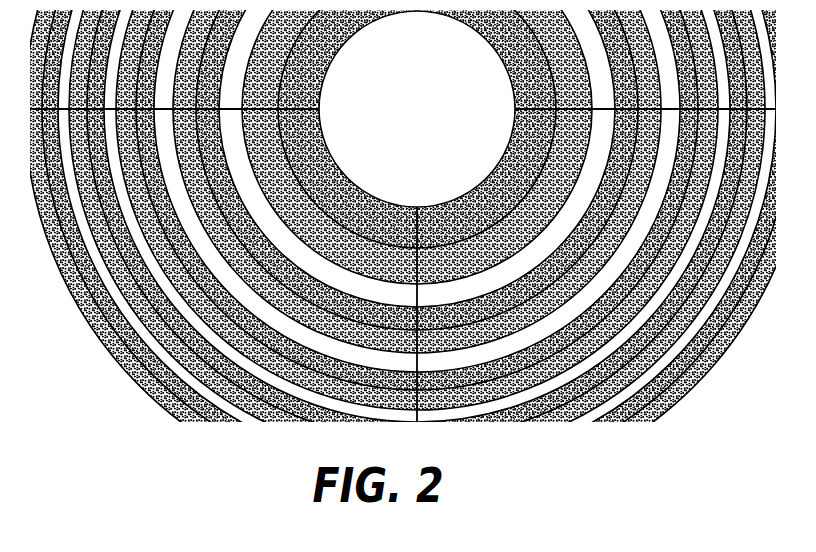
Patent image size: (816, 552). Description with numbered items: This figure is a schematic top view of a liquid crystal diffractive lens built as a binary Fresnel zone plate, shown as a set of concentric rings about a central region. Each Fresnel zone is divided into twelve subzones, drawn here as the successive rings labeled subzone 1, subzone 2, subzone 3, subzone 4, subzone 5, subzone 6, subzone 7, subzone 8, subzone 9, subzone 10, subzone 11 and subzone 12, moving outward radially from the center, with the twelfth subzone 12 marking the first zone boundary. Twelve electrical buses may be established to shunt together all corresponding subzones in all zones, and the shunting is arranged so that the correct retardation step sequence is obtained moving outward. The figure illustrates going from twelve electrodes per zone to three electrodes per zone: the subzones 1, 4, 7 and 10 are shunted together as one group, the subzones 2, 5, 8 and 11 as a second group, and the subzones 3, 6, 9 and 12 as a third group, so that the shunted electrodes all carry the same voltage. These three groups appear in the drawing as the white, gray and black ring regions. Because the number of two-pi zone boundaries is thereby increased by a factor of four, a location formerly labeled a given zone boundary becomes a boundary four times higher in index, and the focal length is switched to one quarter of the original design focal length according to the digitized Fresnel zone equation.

The first subzone 1 is at (752, 193).
The second subzone 2 is at (762, 292).
The third subzone 3 is at (768, 418).
The fourth subzone 4 is at (630, 420).
The fifth subzone 5 is at (530, 418).
The sixth subzone 6 is at (453, 410).
The seventh subzone 7 is at (378, 408).
The eighth subzone 8 is at (297, 418).
The ninth subzone 9 is at (202, 417).
The tenth subzone 10 is at (75, 408).
The eleventh subzone 11 is at (37, 307).
The twelfth subzone 12 is at (38, 202).